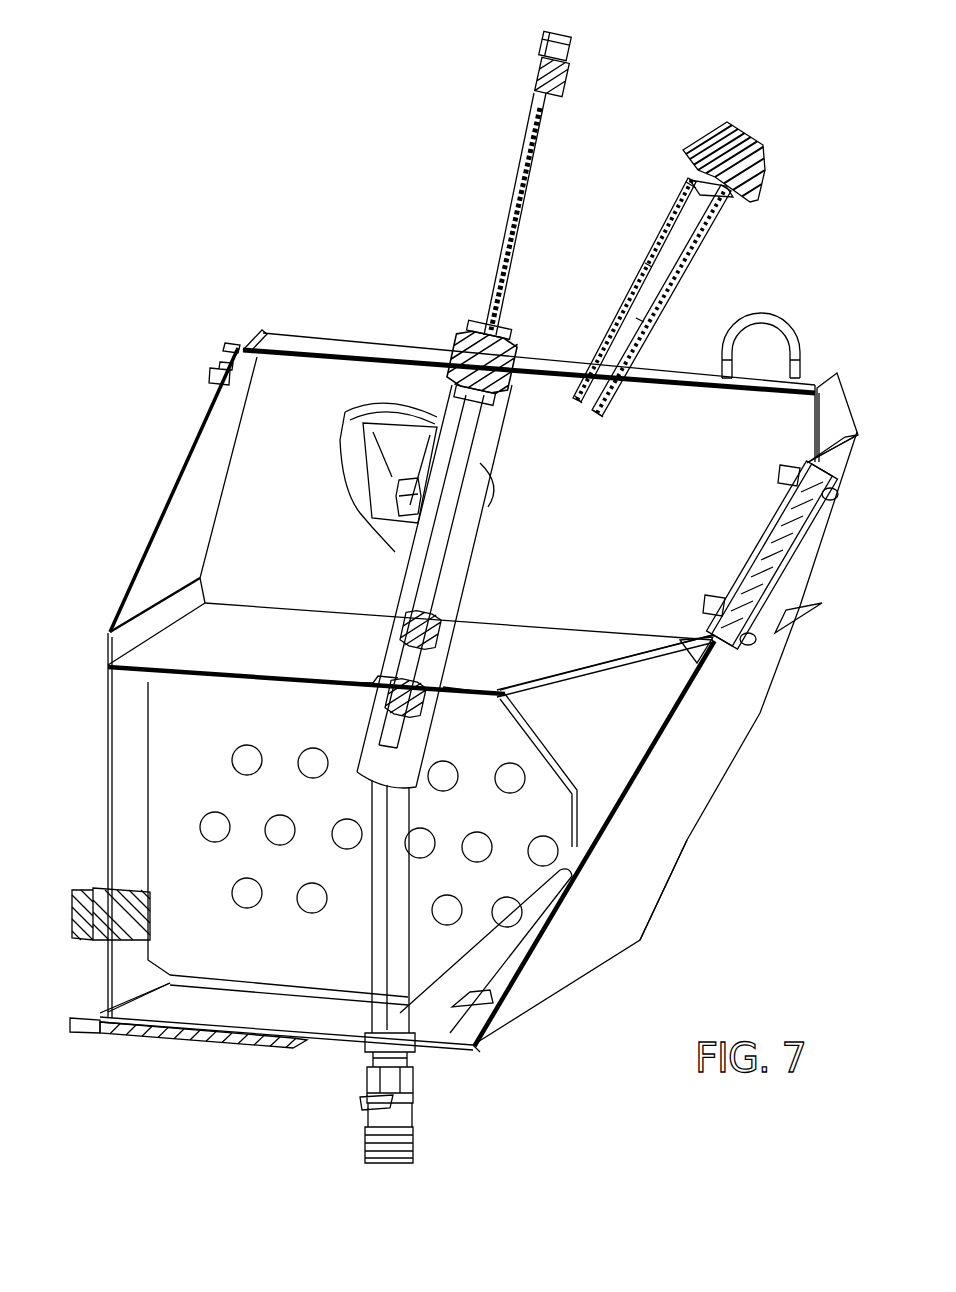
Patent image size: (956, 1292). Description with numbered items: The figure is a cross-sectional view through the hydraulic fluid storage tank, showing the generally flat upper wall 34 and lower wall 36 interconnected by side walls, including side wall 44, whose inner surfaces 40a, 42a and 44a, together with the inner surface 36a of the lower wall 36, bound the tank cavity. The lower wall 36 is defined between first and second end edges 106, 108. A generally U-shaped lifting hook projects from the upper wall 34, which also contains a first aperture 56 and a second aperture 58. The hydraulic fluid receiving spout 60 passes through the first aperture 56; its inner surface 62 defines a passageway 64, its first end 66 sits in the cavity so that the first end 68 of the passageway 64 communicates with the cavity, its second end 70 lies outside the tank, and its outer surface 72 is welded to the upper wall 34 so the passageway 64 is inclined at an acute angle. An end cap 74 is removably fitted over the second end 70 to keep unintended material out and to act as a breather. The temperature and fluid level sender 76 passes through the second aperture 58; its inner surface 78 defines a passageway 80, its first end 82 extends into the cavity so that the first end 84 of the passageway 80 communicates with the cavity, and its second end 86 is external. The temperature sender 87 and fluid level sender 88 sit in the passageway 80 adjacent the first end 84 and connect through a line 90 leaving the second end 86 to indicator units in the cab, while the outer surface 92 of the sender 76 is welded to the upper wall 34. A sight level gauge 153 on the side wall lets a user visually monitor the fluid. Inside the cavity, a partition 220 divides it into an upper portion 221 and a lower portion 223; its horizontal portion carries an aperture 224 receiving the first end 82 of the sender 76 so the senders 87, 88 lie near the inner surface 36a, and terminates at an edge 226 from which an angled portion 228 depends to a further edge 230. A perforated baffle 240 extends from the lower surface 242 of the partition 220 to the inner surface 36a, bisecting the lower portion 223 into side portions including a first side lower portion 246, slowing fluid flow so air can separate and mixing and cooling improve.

The upper wall 34 is at (687, 373).
The lower wall 36 is at (225, 1045).
The inner surface of lower wall 36a is at (163, 1005).
The inner surface of side wall 40a is at (648, 727).
The inner surface of side wall 42a is at (322, 375).
The side wall 44 is at (137, 574).
The inner surface of side wall 44a is at (187, 525).
The first aperture 56 is at (613, 365).
The second aperture 58 is at (460, 345).
The hydraulic fluid receiving spout 60 is at (693, 302).
The inner surface of spout 62 is at (675, 255).
The passageway of spout 64 is at (640, 318).
The first end of spout 66 is at (603, 420).
The first end of passageway 68 is at (585, 400).
The second end of spout 70 is at (683, 188).
The outer surface of spout 72 is at (653, 260).
The end cap 74 is at (752, 124).
The temperature and fluid level sender 76 is at (398, 557).
The inner surface of sender 78 is at (412, 598).
The passageway of sender 80 is at (458, 547).
The first end of sender 82 is at (355, 745).
The first end of passageway 84 is at (372, 845).
The second end of sender 86 is at (527, 343).
The temperature sender 87 is at (435, 637).
The fluid level sender 88 is at (420, 707).
The line 90 is at (527, 128).
The outer surface of sender 92 is at (452, 372).
The first end edge of lower wall 106 is at (473, 1047).
The second end edge of lower wall 108 is at (77, 1033).
The sight level gauge 153 is at (812, 532).
The partition 220 is at (142, 678).
The upper portion of cavity 221 is at (692, 588).
The lower portion of cavity 223 is at (297, 970).
The aperture 224 is at (517, 687).
The edge 226 is at (540, 660).
The angled portion 228 is at (560, 763).
The edge 230 is at (580, 828).
The baffle 240 is at (157, 807).
The lower surface of partition 242 is at (233, 683).
The first side lower portion 246 is at (178, 893).